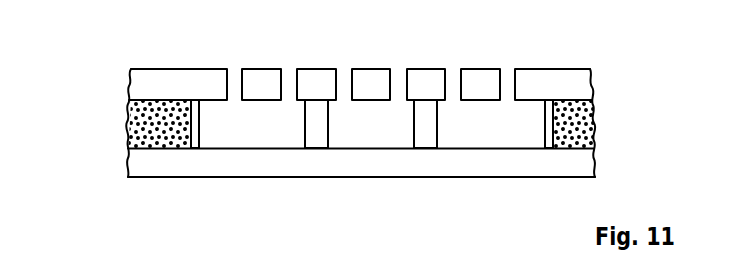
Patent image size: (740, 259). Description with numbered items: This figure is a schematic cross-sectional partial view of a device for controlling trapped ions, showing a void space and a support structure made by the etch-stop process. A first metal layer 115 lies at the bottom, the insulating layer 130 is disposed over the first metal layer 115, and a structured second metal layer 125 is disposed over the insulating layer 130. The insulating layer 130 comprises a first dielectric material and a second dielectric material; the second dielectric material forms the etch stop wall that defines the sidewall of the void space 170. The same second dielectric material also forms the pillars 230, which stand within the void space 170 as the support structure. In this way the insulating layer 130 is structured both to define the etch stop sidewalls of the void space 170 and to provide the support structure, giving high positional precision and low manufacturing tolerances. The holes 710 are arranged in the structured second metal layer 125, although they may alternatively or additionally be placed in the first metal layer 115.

The first metal layer 115 is at (533, 172).
The structured second metal layer 125 is at (567, 80).
The insulating layer 130 is at (364, 145).
The void space 170 is at (260, 138).
The pillars 230 is at (422, 140).
The holes 710 is at (343, 75).